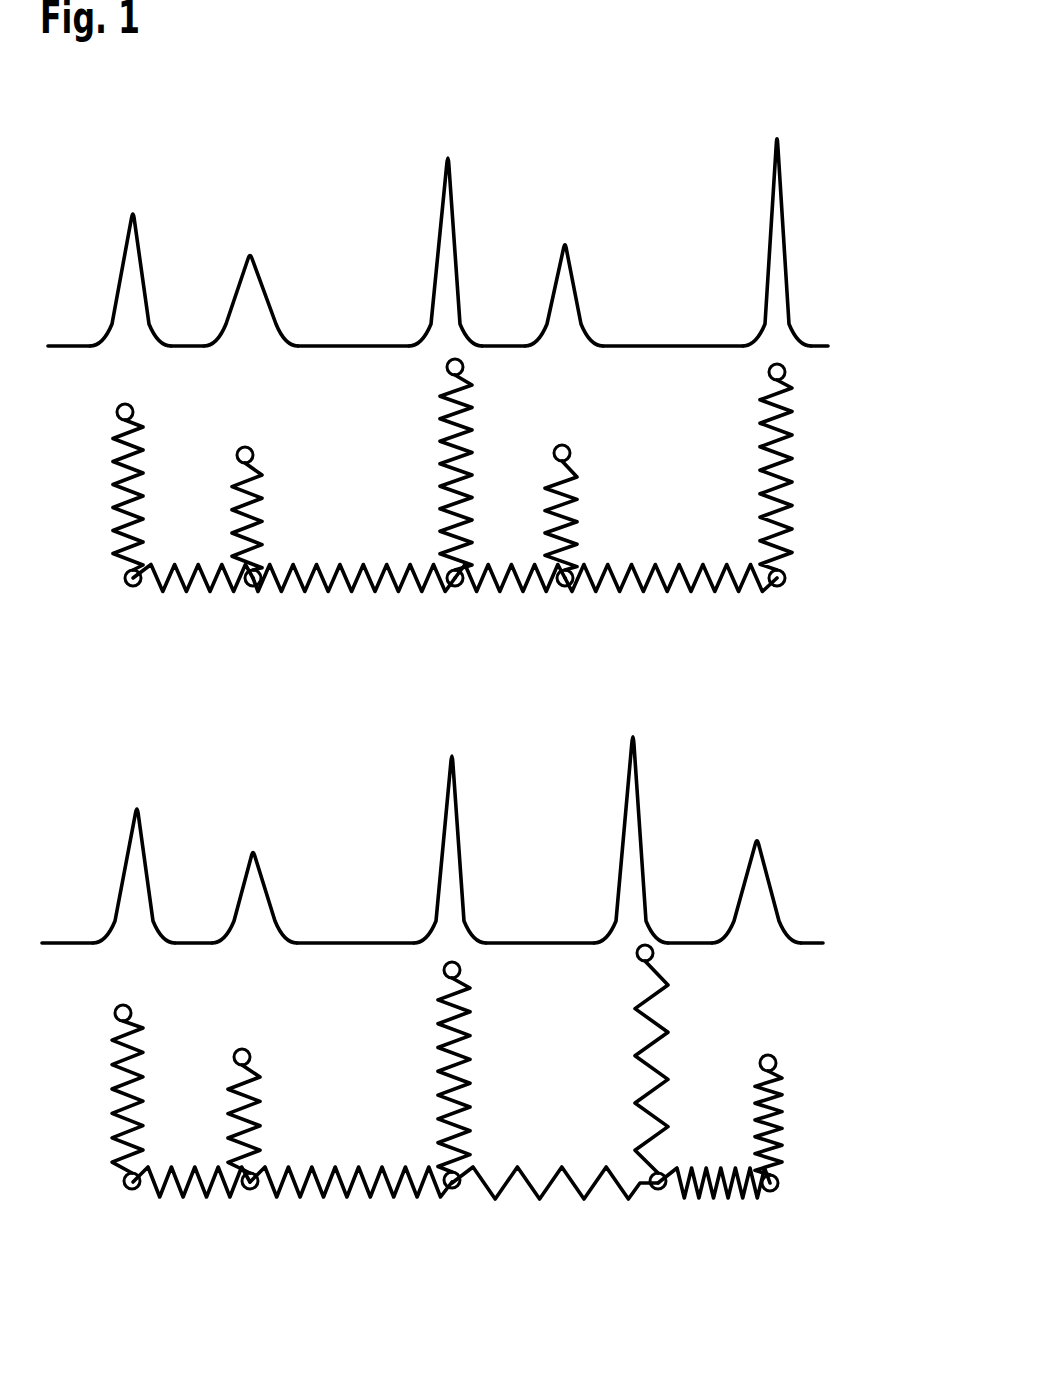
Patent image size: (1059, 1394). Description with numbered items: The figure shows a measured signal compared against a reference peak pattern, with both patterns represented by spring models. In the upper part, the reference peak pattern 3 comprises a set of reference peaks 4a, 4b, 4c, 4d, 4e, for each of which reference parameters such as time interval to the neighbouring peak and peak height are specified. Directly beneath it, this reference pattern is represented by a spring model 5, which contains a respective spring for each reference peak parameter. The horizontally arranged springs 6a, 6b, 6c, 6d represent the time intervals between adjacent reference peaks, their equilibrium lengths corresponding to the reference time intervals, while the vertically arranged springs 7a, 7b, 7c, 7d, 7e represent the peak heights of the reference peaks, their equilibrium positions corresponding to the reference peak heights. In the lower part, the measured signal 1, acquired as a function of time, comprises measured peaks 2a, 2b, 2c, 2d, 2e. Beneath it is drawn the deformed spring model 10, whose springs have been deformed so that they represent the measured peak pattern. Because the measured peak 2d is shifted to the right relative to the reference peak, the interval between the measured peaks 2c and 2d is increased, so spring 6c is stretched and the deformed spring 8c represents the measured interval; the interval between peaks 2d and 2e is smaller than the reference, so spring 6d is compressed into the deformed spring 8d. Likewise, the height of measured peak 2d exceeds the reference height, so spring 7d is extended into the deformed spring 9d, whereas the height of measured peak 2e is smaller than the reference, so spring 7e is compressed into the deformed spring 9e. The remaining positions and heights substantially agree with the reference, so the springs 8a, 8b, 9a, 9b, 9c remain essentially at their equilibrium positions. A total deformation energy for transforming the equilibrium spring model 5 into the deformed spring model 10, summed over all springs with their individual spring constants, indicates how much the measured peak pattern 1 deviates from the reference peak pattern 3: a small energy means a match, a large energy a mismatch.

The measured signal 1 is at (360, 945).
The measured peak 2a is at (139, 803).
The measured peak 2b is at (255, 848).
The measured peak 2c is at (454, 748).
The measured peak 2d is at (635, 728).
The measured peak 2e is at (759, 836).
The reference peak pattern 3 is at (358, 347).
The reference peak 4a is at (135, 208).
The reference peak 4b is at (253, 252).
The reference peak 4c is at (450, 150).
The reference peak 4d is at (567, 240).
The reference peak 4e is at (780, 130).
The spring model 5 is at (822, 467).
The spring 6a is at (187, 597).
The spring 6b is at (323, 597).
The spring 6c is at (498, 597).
The spring 6d is at (643, 597).
The spring 7a is at (143, 523).
The spring 7b is at (259, 523).
The spring 7c is at (472, 505).
The spring 7d is at (577, 523).
The spring 7e is at (760, 522).
The spring 8a is at (187, 1195).
The spring 8b is at (323, 1195).
The deformed spring 8c is at (538, 1198).
The deformed spring 8d is at (702, 1203).
The spring 9a is at (143, 1125).
The spring 9b is at (260, 1125).
The spring 9c is at (470, 1108).
The deformed spring 9d is at (668, 1078).
The deformed spring 9e is at (783, 1122).
The deformed spring model 10 is at (829, 1063).